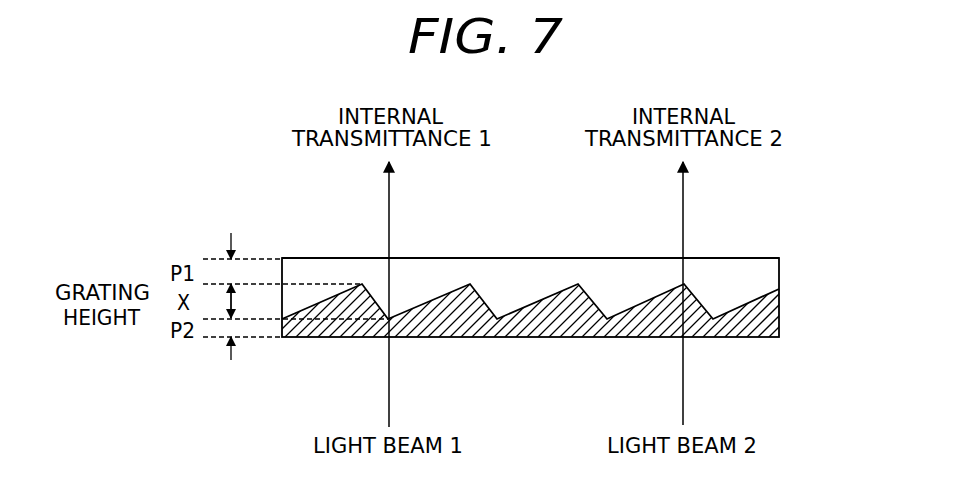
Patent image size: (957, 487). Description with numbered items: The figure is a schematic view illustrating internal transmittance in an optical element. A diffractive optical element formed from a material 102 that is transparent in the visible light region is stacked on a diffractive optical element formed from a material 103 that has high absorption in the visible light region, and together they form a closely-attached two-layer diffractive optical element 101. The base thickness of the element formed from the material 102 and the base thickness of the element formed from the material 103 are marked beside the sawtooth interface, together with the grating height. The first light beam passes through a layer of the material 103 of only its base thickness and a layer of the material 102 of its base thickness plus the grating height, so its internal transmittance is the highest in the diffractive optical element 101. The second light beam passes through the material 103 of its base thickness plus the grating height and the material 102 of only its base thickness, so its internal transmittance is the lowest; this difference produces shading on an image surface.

The closely-attached two-layer diffractive optical element 101 is at (802, 248).
The material transparent in the visible light region 102 is at (326, 268).
The material having high absorption in the visible light region 103 is at (313, 331).